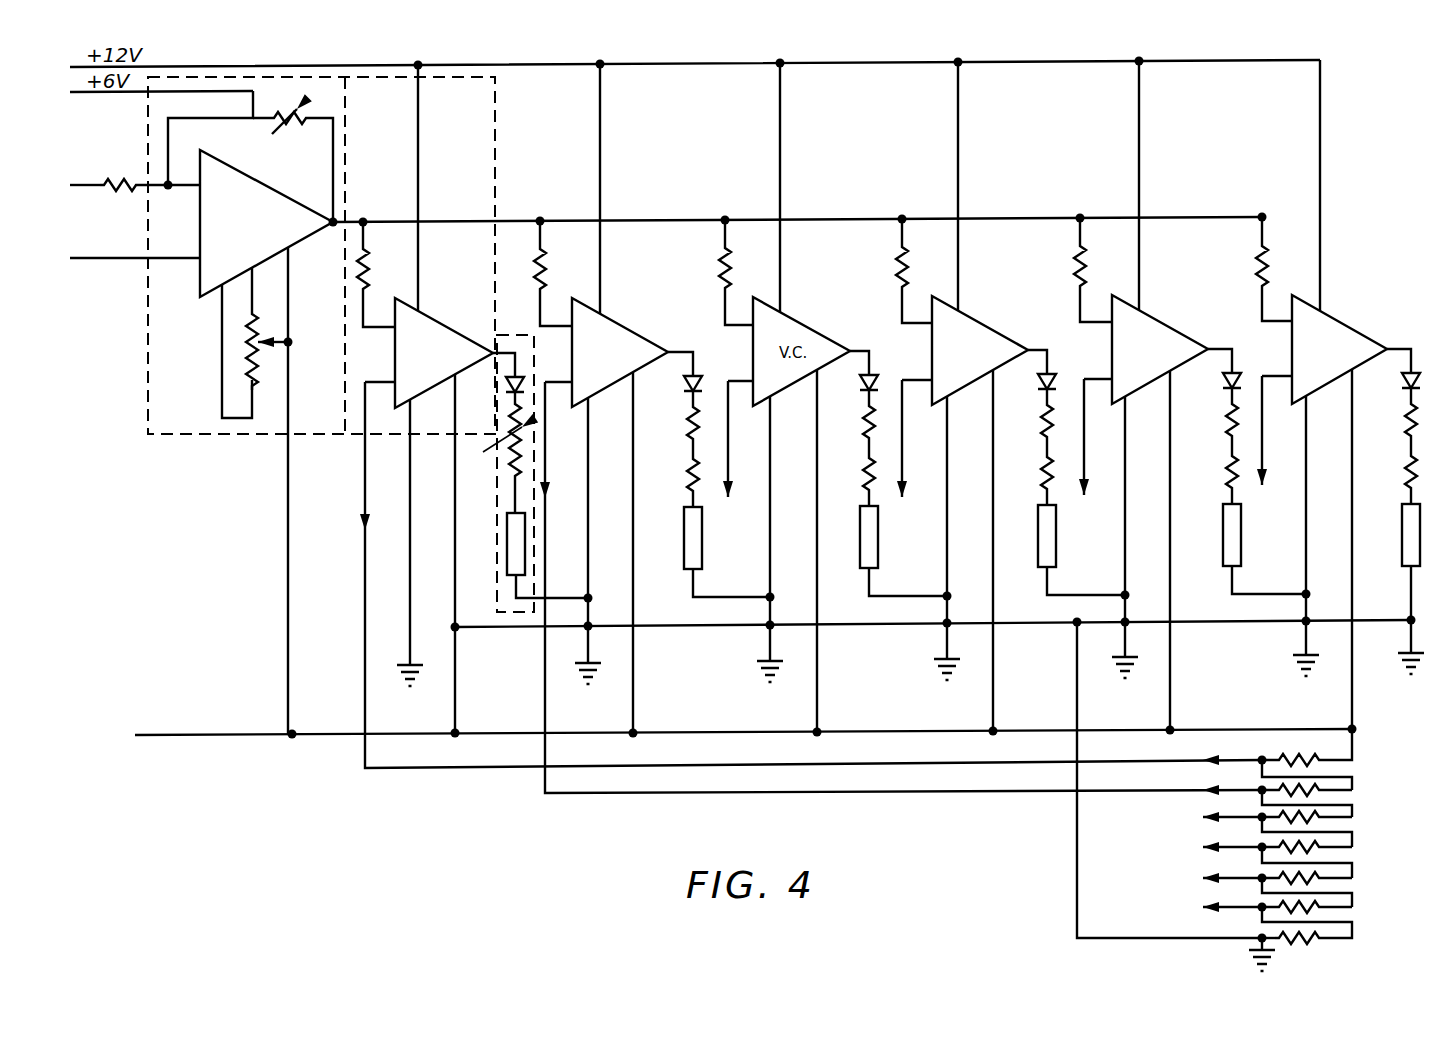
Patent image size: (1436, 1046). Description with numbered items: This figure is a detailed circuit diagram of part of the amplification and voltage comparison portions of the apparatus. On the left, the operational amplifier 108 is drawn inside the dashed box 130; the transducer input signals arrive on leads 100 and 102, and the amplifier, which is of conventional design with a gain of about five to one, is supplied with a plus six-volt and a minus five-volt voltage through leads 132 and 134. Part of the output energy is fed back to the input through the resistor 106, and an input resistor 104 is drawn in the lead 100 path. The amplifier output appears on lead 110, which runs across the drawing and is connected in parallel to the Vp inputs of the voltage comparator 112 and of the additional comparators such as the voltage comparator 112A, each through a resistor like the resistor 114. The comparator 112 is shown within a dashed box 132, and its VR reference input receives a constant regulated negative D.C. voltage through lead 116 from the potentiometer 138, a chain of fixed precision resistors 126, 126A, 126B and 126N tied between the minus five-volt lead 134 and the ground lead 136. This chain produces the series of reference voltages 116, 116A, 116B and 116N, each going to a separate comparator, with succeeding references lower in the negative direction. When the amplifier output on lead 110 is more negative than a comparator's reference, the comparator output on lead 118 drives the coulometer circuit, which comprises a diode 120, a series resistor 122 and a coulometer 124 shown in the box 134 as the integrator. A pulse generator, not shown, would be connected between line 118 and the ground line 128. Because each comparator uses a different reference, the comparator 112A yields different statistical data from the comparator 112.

The lead 100 is at (84, 184).
The lead 102 is at (120, 258).
The input resistor 104 is at (120, 175).
The resistor 106 is at (283, 111).
The operational amplifier 108 is at (272, 190).
The lead 110 is at (400, 220).
The voltage comparator 112 is at (435, 320).
The voltage comparator 112A is at (613, 326).
The input resistor 114 is at (374, 271).
The lead 116 is at (365, 640).
The reference voltage 116A is at (1235, 792).
The reference voltage 116B is at (1228, 824).
The reference voltage 116N is at (1235, 907).
The lead 118 is at (492, 360).
The diode 120 is at (519, 385).
The series resistor 122 is at (498, 456).
The coulometer 124 is at (504, 554).
The voltage divider resistor 126 is at (1322, 794).
The voltage divider resistor 126A is at (1322, 822).
The voltage divider resistor 126B is at (1322, 851).
The voltage divider resistor 126N is at (1322, 940).
The ground line 128 is at (523, 630).
The dashed box 130 is at (239, 435).
The lead 132 is at (190, 94).
The lead 134 is at (497, 605).
The ground lead 136 is at (1077, 856).
The potentiometer 138 is at (1376, 742).